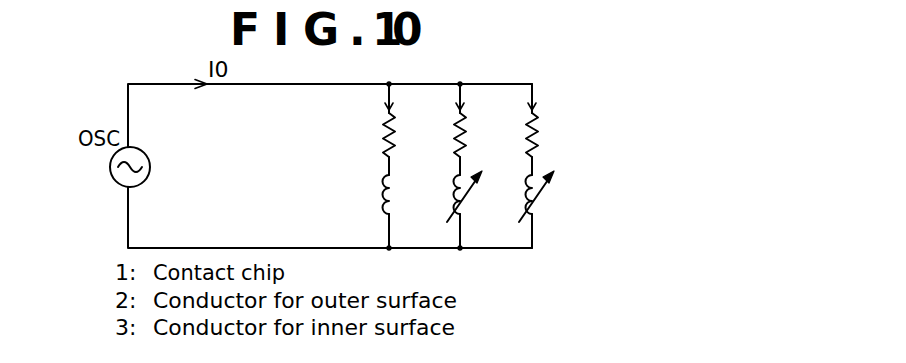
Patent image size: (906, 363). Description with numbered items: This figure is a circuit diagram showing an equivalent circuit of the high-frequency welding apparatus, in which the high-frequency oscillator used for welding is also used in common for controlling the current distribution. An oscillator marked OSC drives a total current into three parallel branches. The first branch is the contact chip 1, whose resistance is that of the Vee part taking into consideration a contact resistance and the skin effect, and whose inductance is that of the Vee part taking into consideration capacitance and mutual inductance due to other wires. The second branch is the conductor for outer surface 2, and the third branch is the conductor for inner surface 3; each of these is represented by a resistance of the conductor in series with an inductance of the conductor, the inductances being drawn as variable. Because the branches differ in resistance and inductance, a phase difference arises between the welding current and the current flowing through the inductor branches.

The contact chip 1 is at (389, 179).
The conductor for outer surface 2 is at (460, 179).
The conductor for inner surface 3 is at (533, 180).